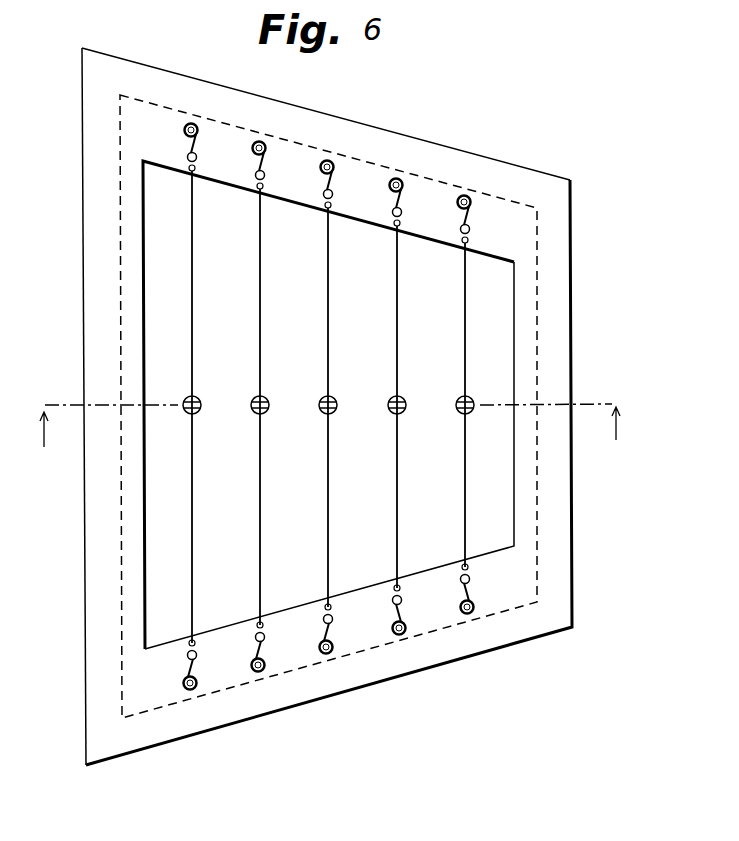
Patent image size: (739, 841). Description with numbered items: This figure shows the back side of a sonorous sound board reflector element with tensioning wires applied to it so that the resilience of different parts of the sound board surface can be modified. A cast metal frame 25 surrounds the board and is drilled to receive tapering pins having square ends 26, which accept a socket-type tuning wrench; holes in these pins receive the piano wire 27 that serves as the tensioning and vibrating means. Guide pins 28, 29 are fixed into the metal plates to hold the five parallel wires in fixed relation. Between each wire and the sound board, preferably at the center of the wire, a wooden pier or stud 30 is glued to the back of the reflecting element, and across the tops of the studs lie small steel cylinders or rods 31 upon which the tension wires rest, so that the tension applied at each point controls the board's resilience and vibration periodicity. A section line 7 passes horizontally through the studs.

The section line 7- 7 is at (328, 418).
The panel 25 is at (557, 497).
The hook eyes 26 is at (466, 195).
The rods 27 is at (326, 328).
The rings 28 is at (333, 619).
The small rings 29 is at (395, 588).
The clamp 30 is at (392, 399).
The clamp bars 31 is at (392, 411).